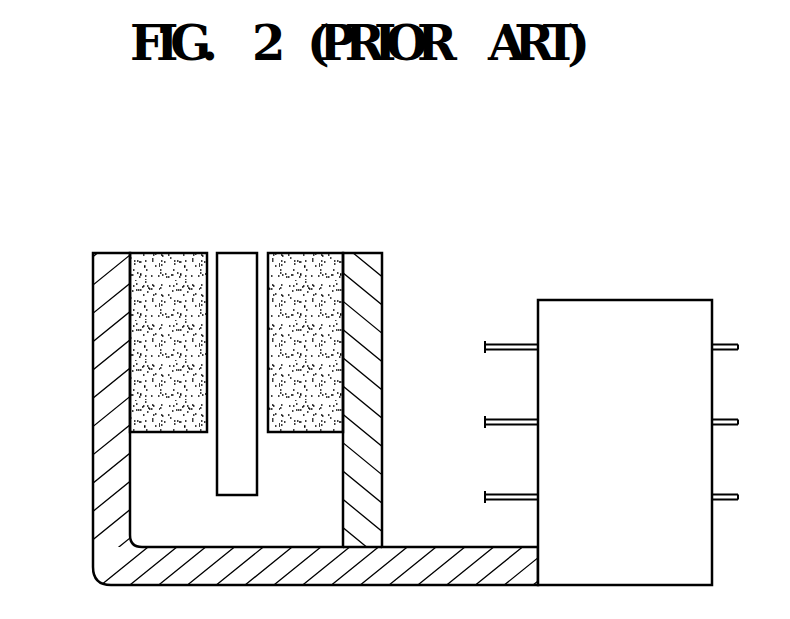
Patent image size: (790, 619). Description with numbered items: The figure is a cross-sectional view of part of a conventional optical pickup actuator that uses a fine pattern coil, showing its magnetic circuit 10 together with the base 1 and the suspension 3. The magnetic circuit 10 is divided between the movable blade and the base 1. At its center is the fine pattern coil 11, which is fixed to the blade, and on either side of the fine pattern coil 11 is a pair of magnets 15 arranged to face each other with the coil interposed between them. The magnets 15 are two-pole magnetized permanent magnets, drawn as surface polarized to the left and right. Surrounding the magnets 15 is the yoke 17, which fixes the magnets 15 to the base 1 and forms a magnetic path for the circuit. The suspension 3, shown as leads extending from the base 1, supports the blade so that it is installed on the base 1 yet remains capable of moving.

The magnetic circuit 10 is at (403, 193).
The yoke 17 is at (93, 407).
The magnets 15 is at (155, 322).
The fine pattern coil 11 is at (240, 265).
The base 1 is at (650, 310).
The suspension 3 is at (512, 345).